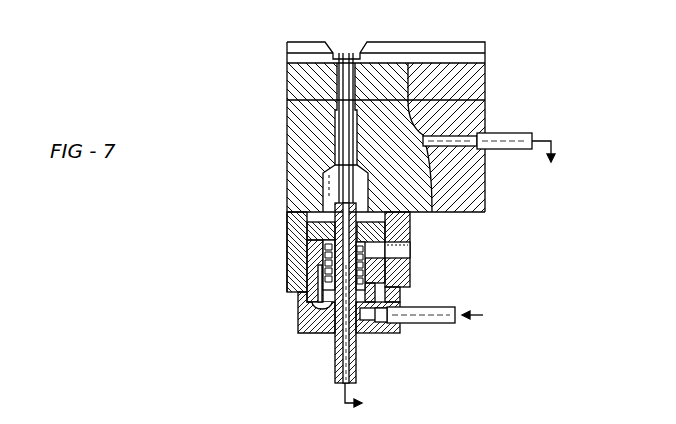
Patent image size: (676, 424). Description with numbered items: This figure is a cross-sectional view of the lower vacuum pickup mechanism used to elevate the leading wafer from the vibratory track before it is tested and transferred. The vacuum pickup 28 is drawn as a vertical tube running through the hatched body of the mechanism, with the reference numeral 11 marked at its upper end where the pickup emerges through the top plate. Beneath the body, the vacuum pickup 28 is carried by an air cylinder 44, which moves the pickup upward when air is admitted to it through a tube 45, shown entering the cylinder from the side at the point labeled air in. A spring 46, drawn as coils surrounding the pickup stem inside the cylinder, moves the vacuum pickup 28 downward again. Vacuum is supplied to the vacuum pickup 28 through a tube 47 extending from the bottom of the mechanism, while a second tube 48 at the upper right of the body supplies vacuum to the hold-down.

The tube 11 is at (345, 55).
The vacuum pickup 28 is at (342, 130).
The air cylinder 44 is at (298, 303).
The tube 45 is at (424, 303).
The spring 46 is at (328, 255).
The tube 47 is at (337, 361).
The tube 48 is at (517, 133).